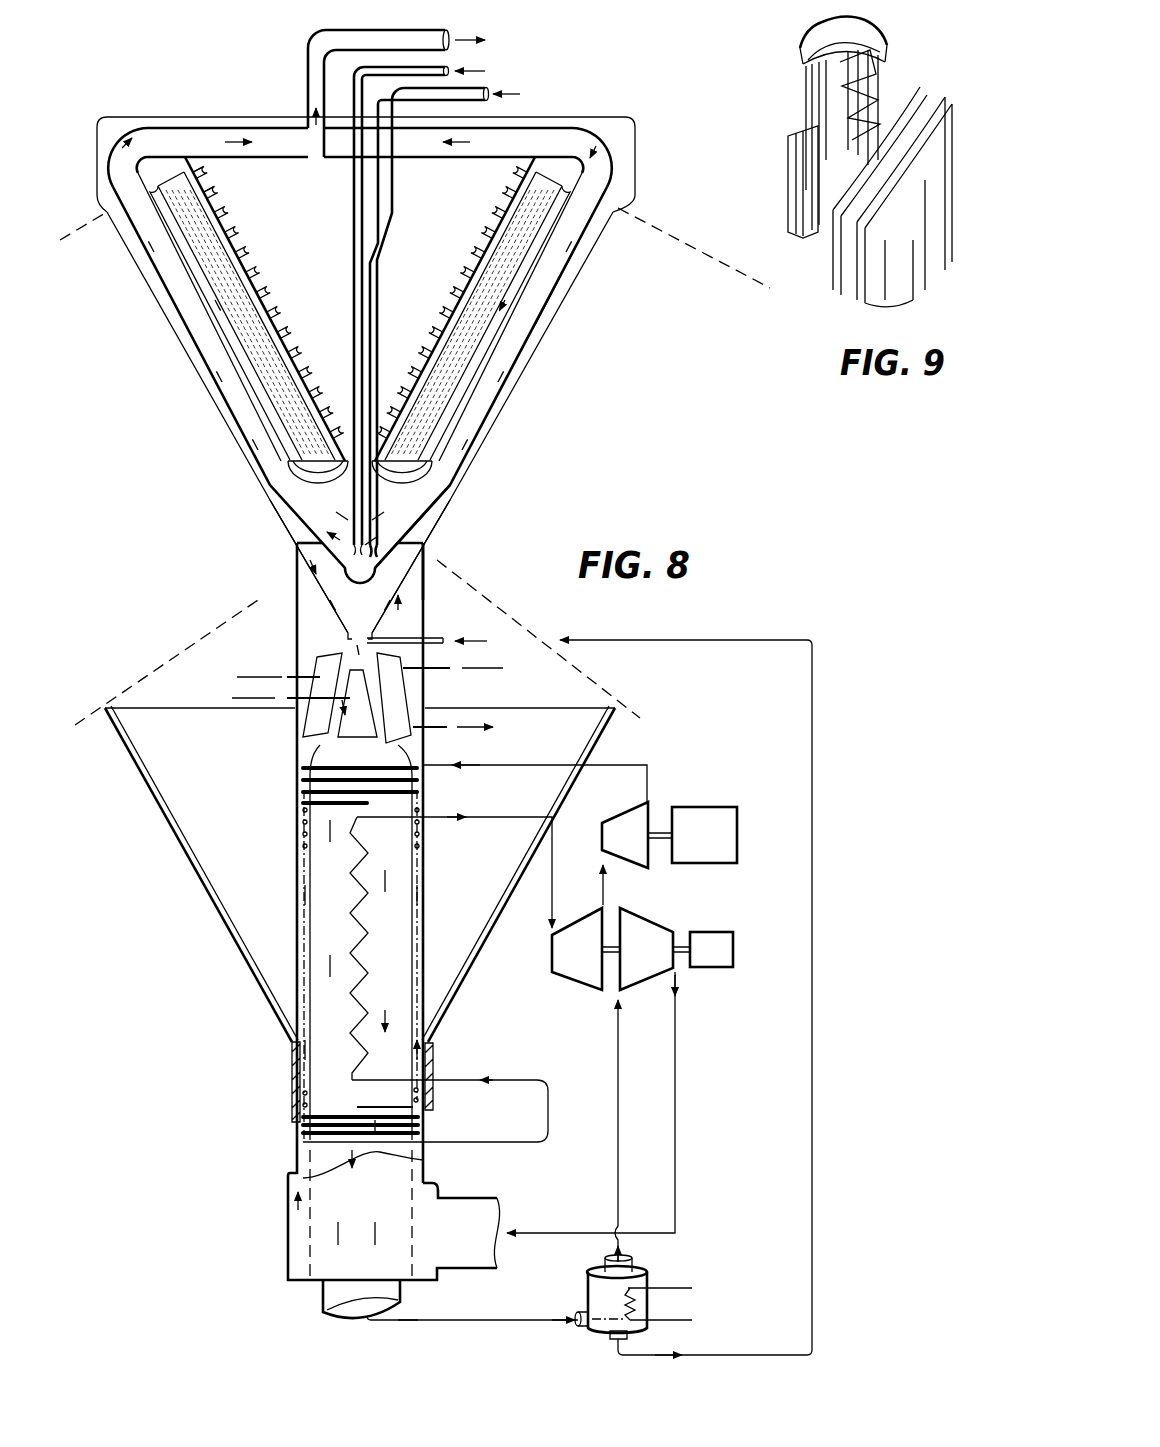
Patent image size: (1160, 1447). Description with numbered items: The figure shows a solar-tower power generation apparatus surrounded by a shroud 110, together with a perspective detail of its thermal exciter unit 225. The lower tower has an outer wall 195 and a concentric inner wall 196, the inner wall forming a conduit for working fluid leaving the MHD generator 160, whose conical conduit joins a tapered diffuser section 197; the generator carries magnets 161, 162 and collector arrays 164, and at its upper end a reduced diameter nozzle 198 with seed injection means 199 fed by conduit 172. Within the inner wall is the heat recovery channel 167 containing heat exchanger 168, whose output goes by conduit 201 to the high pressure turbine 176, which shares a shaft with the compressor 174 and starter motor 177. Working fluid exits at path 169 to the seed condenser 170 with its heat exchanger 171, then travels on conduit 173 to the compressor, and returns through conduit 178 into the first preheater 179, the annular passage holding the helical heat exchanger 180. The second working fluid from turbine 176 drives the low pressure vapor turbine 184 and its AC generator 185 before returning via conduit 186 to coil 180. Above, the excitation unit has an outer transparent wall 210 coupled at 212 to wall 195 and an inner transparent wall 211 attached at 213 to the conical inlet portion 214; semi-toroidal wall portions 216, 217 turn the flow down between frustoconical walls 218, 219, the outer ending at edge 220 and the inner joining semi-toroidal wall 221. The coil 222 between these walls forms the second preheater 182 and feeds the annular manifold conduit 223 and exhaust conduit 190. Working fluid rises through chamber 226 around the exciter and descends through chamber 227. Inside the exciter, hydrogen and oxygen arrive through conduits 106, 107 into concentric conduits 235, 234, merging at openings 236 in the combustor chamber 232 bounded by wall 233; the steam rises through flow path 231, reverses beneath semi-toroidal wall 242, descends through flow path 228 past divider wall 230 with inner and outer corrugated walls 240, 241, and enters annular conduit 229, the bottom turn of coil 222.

In FIG. 8, the hydrogen supply conduit 106 is at (442, 68).
In FIG. 8, the oxygen supply conduit 107 is at (486, 92).
In FIG. 8, the shroud 110 is at (218, 913).
In FIG. 8, the MHD generator 160 is at (268, 662).
In FIG. 8, the magnet 161 is at (320, 656).
In FIG. 8, the magnet 162 is at (401, 657).
In FIG. 8, the collector arrays 164 is at (323, 750).
In FIG. 8, the heat recovery channel 167 is at (404, 959).
In FIG. 8, the heat exchanger 168 is at (366, 972).
In FIG. 8, the working fluid path 169 is at (507, 1320).
In FIG. 8, the seed condenser 170 is at (643, 1268).
In FIG. 8, the heat exchanger 171 is at (620, 1307).
In FIG. 8, the seed conduit 172 is at (437, 638).
In FIG. 8, the conduit 173 is at (618, 1062).
In FIG. 8, the compressor portion 174 is at (663, 964).
In FIG. 8, the turbine portion 176 is at (593, 964).
In FIG. 8, the starter motor 177 is at (728, 964).
In FIG. 8, the conduit 178 is at (675, 1037).
In FIG. 8, the first preheater 179 is at (300, 1087).
In FIG. 8, the heat exchanger 180 is at (413, 1113).
In FIG. 8, the second preheater 182 is at (268, 312).
In FIG. 8, the low pressure vapor turbine 184 is at (612, 838).
In FIG. 8, the AC generator 185 is at (719, 846).
In FIG. 8, the conduit 186 is at (642, 764).
In FIG. 8, the exhaust conduit 190 is at (385, 30).
In FIG. 8, the outer wall 195 is at (297, 900).
In FIG. 8, the inner wall 196 is at (313, 937).
In FIG. 8, the tapered diffuser section 197 is at (320, 753).
In FIG. 8, the nozzle 198 is at (348, 635).
In FIG. 8, the seed injection means 199 is at (370, 627).
In FIG. 8, the conduit 201 is at (562, 812).
In FIG. 8, the outer frustoconical transparent wall 210 is at (192, 359).
In FIG. 8, the inner frustoconical transparent wall 211 is at (240, 433).
In FIG. 8, the coupling point 212 is at (294, 547).
In FIG. 8, the attachment point 213 is at (312, 540).
In FIG. 8, the conical inlet portion 214 is at (303, 546).
In FIG. 8, the interconnecting wall portion 216 is at (125, 138).
In FIG. 8, the interconnecting wall portion 217 is at (127, 163).
In FIG. 8, the frustoconical wall 218 is at (203, 207).
In FIG. 8, the frustoconical wall 219 is at (245, 240).
In FIG. 8, the circular lower edge 220 is at (330, 447).
In FIG. 8, the semi-toroidal wall portion 221 is at (315, 478).
In FIG. 8, the coil 222 is at (258, 282).
In FIG. 8, the annular manifold conduit 223 is at (258, 137).
In FIG. 8, the thermal exciter unit 225 is at (158, 243).
In FIG. 9, the thermal exciter unit 225 is at (897, 160).
In FIG. 8, the chamber 226 is at (237, 313).
In FIG. 8, the chamber 227 is at (230, 384).
In FIG. 8, the inner flow path 228 is at (483, 343).
In FIG. 9, the inner flow path 228 is at (833, 78).
In FIG. 8, the annular conduit 229 is at (457, 443).
In FIG. 8, the inner divider wall 230 is at (457, 400).
In FIG. 9, the inner divider wall 230 is at (800, 147).
In FIG. 8, the upward flow path 231 is at (440, 410).
In FIG. 9, the upward flow path 231 is at (887, 90).
In FIG. 8, the combustor chamber 232 is at (413, 508).
In FIG. 8, the wall 233 is at (423, 535).
In FIG. 8, the oxygen conduit 234 is at (372, 297).
In FIG. 8, the hydrogen conduit 235 is at (368, 320).
In FIG. 8, the openings 236 is at (420, 500).
In FIG. 9, the inner corrugated wall 240 is at (817, 98).
In FIG. 9, the outer corrugated wall 241 is at (880, 138).
In FIG. 9, the semi-toroidal wall 242 is at (865, 24).